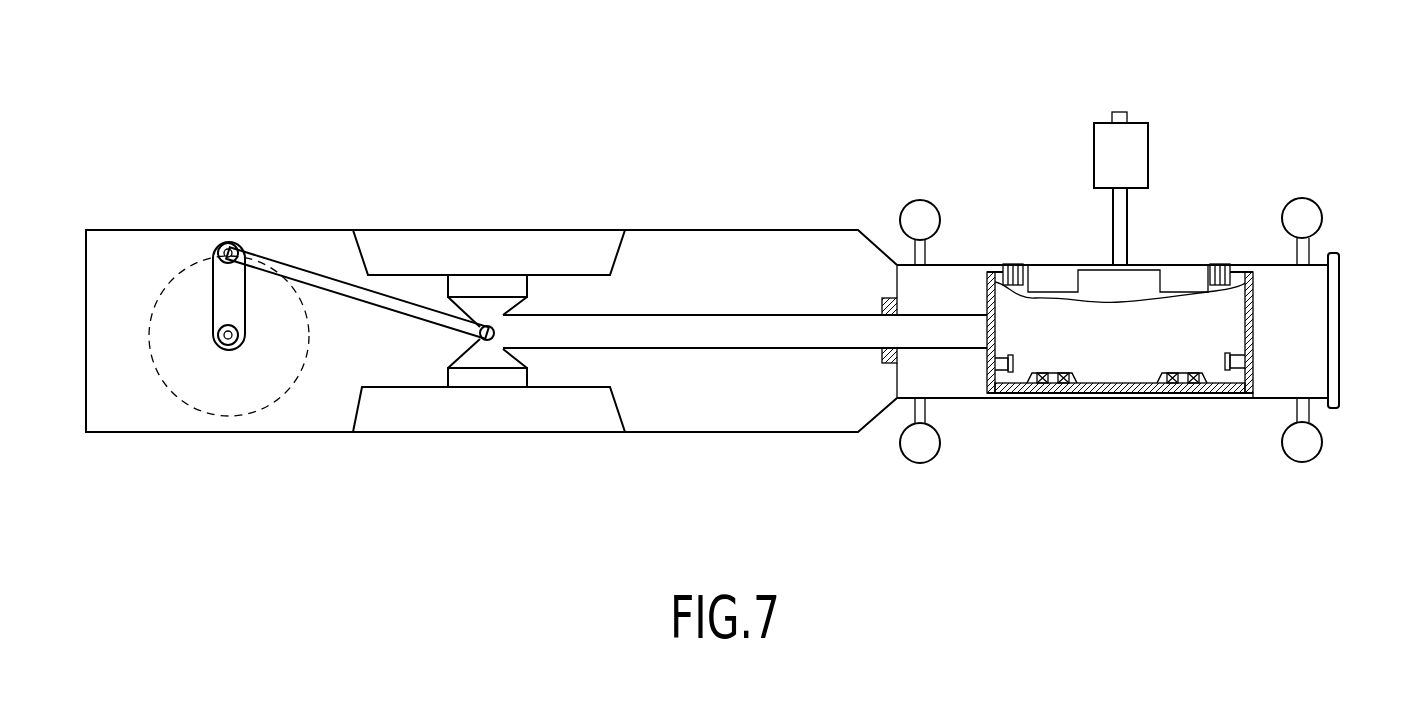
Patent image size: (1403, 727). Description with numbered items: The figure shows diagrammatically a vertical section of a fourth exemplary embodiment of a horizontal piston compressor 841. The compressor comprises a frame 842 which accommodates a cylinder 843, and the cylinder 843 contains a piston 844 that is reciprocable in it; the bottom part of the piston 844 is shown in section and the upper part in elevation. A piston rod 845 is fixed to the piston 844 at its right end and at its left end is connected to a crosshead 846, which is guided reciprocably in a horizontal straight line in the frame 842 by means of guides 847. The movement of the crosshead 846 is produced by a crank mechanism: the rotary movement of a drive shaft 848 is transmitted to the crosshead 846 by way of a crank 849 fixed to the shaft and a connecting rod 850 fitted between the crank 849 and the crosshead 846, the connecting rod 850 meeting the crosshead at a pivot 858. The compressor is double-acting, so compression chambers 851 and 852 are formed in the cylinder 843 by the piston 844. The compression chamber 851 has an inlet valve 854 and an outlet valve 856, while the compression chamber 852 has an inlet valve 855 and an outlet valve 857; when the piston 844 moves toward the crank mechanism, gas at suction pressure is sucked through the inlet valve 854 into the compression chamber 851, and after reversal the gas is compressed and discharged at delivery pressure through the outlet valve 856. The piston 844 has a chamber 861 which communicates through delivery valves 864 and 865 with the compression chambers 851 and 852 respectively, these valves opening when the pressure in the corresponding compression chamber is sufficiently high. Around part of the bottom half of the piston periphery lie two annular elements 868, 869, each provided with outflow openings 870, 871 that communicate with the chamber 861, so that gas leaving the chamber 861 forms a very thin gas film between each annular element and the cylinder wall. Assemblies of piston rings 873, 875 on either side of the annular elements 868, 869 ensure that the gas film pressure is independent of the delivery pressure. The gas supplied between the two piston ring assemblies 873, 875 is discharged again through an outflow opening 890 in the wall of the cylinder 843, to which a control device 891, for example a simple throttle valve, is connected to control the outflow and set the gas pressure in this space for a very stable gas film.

The horizontal piston compressor 841 is at (826, 140).
The frame 842 is at (698, 228).
The cylinder 843 is at (945, 263).
The piston 844 is at (1135, 264).
The piston rod 845 is at (757, 332).
The crosshead 846 is at (493, 283).
The guides 847 is at (594, 240).
The drive shaft 848 is at (228, 345).
The crank 849 is at (213, 280).
The connecting rod 850 is at (335, 270).
The compression chamber 851 is at (1277, 383).
The compression chamber 852 is at (912, 386).
The inlet valve 854 is at (1285, 215).
The inlet valve 855 is at (907, 205).
The outlet valve 856 is at (1322, 448).
The outlet valve 857 is at (900, 452).
The pivot pin 858 is at (478, 338).
The chamber 861 is at (1098, 343).
The delivery valve 864 is at (1245, 363).
The delivery valve 865 is at (977, 393).
The annular element 868 is at (1047, 268).
The annular element 869 is at (1177, 270).
The outflow opening 870 is at (1050, 398).
The outflow opening 871 is at (1178, 398).
The piston rings 873 is at (1220, 398).
The piston rings 875 is at (1007, 398).
The outflow opening 890 is at (1118, 264).
The control device 891 is at (1138, 128).